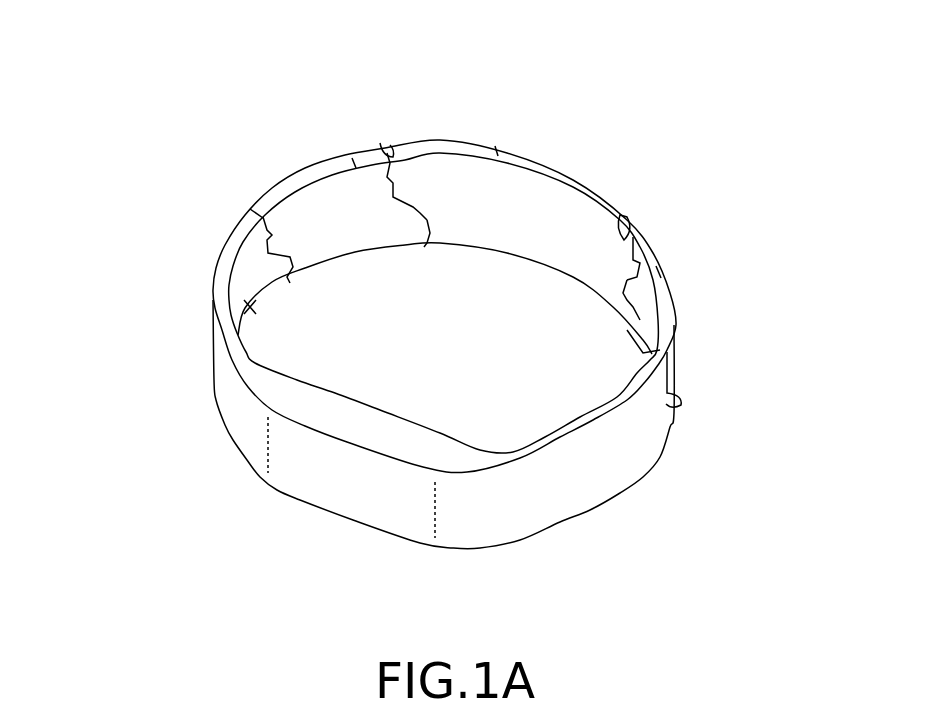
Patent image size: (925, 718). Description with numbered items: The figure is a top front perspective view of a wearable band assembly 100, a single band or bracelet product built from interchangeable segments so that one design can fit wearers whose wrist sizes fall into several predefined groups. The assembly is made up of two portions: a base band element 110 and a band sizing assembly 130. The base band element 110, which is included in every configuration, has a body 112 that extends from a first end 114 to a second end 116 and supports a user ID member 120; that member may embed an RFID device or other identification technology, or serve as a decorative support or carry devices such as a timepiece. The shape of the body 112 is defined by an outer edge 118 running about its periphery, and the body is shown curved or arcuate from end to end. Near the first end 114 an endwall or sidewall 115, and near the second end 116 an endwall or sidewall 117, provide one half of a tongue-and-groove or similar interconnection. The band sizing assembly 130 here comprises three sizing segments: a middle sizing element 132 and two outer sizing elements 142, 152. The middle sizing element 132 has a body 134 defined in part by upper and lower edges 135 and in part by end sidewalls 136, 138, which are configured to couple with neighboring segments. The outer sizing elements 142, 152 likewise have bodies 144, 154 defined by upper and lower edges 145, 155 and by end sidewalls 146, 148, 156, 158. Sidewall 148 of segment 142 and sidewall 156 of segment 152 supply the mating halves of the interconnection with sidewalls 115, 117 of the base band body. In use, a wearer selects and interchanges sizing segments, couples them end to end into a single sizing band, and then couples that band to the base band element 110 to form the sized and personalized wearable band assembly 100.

The wearable band assembly 100 is at (116, 122).
The base band element 110 is at (606, 545).
The body 112 is at (565, 498).
The first end 114 is at (676, 430).
The endwall or sidewall 115 is at (672, 413).
The second end 116 is at (248, 304).
The endwall or sidewall 117 is at (278, 233).
The outer edge 118 is at (518, 450).
The user ID member 120 is at (240, 522).
The band sizing assembly 130 is at (711, 167).
The middle sizing element 132 is at (561, 141).
The body 134 is at (543, 230).
The upper and lower edges 135 is at (496, 154).
The end or sidewall 136 is at (400, 146).
The end or sidewall 138 is at (623, 300).
The outer sizing element 142 is at (707, 303).
The body 144 is at (627, 330).
The upper and lower edges 145 is at (660, 277).
The end or sidewall 146 is at (633, 221).
The end or sidewall 148 is at (664, 356).
The outer sizing element 152 is at (295, 146).
The body 154 is at (358, 234).
The upper and lower edges 155 is at (353, 165).
The end or sidewall 156 is at (290, 283).
The end or sidewall 158 is at (424, 247).